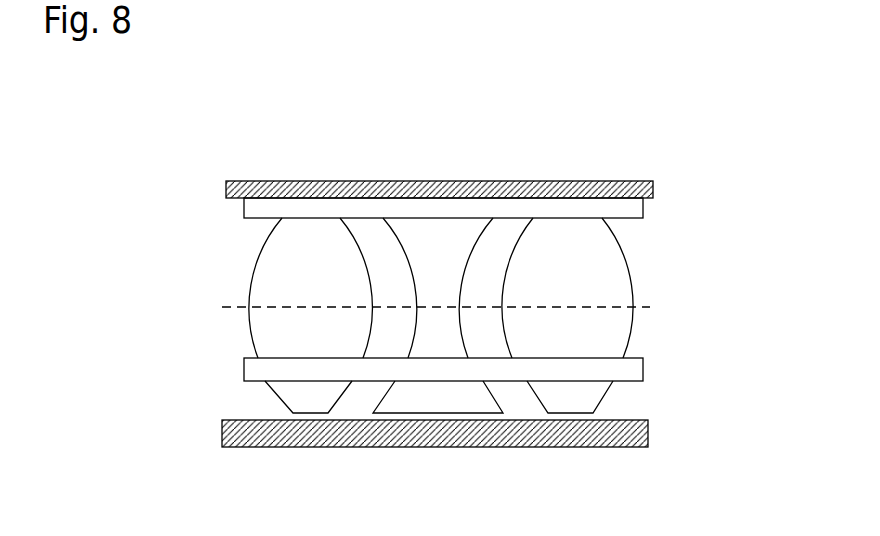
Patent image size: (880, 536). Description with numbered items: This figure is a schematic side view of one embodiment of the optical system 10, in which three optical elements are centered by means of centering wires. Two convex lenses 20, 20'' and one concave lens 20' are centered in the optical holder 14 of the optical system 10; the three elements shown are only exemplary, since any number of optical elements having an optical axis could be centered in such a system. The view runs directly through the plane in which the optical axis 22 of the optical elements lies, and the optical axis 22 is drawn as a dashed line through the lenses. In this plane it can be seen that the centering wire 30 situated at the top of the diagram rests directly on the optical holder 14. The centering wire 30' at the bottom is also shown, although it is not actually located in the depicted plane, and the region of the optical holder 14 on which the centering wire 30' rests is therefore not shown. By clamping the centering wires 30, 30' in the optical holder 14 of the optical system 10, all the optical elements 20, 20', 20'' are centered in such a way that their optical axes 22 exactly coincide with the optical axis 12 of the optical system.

The optical system 10 is at (480, 148).
The optical axis of the optical system 12 is at (227, 303).
The optical holder 14 is at (404, 180).
The optical axis 22 is at (243, 312).
The convex lens 20 is at (253, 317).
The concave lens 20' is at (468, 367).
The convex lens 20'' is at (637, 315).
The centering wire 30 is at (468, 151).
The centering wire 30' is at (421, 438).